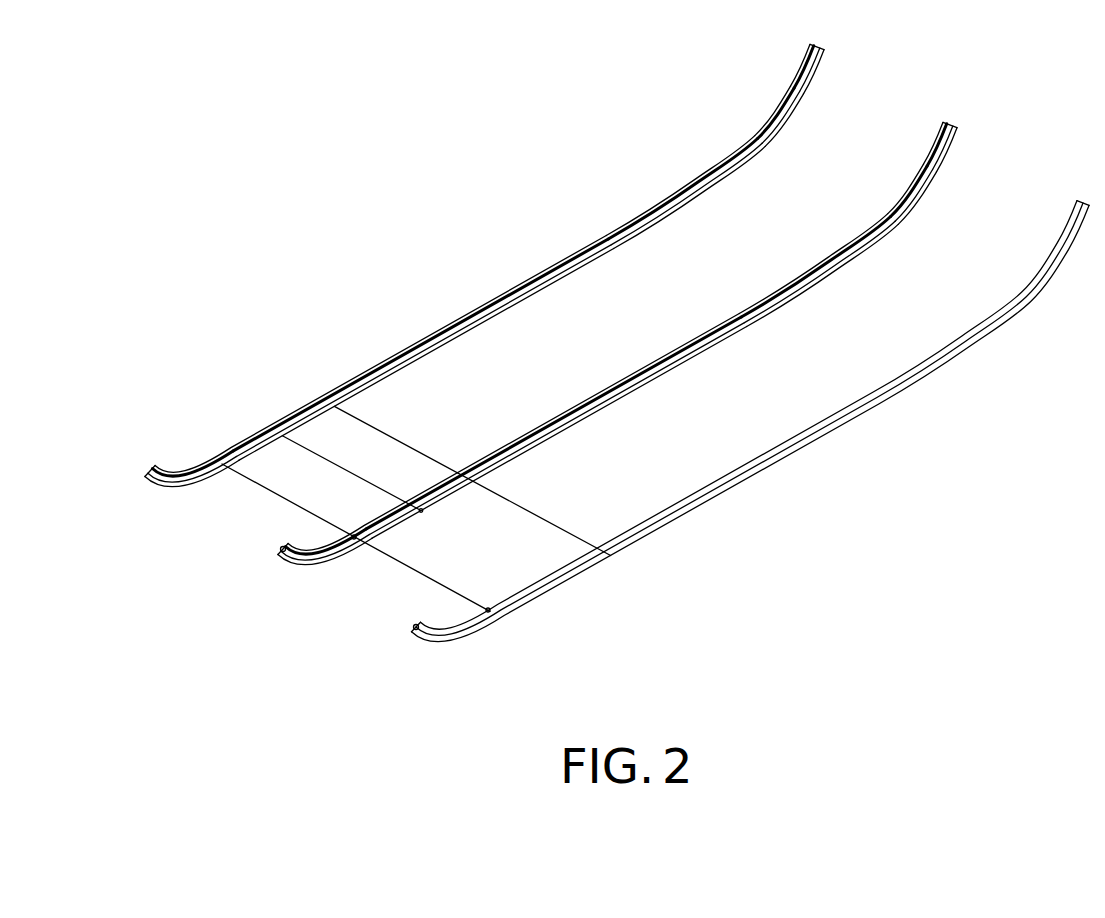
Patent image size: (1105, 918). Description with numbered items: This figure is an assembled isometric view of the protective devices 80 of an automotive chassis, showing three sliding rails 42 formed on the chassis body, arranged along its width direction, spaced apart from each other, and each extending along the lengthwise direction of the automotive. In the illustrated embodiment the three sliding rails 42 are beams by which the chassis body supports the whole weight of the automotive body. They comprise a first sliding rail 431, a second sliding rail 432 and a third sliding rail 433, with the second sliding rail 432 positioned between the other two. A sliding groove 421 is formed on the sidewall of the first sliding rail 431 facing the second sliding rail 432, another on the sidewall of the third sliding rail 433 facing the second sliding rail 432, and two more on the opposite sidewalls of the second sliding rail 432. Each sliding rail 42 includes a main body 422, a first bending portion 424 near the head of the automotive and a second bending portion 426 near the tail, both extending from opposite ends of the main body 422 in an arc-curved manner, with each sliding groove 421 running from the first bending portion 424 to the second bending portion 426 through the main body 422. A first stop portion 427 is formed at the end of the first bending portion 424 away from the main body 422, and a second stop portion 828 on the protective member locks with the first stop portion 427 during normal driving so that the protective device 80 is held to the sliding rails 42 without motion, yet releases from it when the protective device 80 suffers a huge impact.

The sliding rail 42 is at (518, 265).
The sliding groove 421 is at (812, 80).
The main body 422 is at (496, 298).
The first bending portion 424 is at (181, 471).
The second bending portion 426 is at (791, 82).
The first stop portion 427 is at (300, 561).
The first sliding rail 431 is at (696, 178).
The second sliding rail 432 is at (592, 359).
The third sliding rail 433 is at (862, 413).
The protective device 80 is at (405, 509).
The second stop portion 828 is at (352, 538).